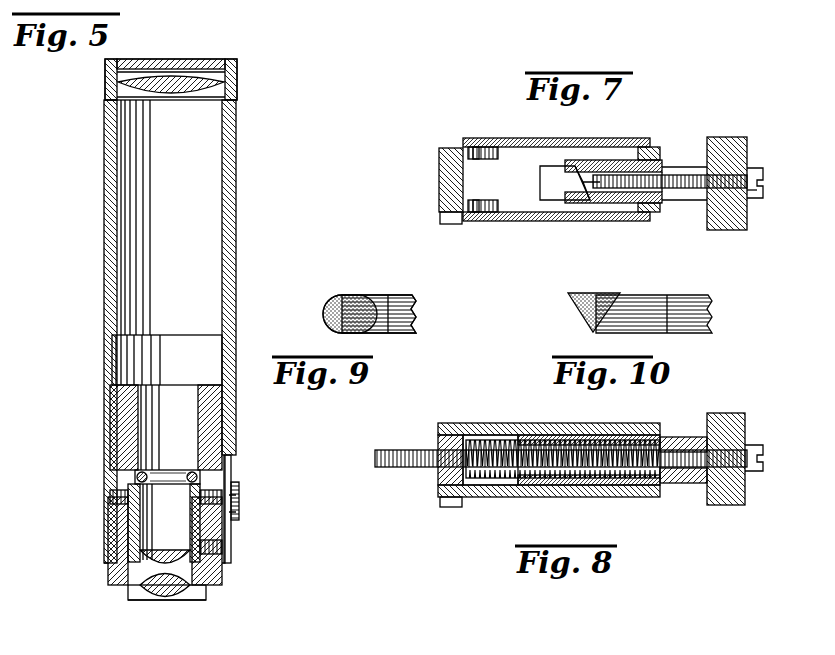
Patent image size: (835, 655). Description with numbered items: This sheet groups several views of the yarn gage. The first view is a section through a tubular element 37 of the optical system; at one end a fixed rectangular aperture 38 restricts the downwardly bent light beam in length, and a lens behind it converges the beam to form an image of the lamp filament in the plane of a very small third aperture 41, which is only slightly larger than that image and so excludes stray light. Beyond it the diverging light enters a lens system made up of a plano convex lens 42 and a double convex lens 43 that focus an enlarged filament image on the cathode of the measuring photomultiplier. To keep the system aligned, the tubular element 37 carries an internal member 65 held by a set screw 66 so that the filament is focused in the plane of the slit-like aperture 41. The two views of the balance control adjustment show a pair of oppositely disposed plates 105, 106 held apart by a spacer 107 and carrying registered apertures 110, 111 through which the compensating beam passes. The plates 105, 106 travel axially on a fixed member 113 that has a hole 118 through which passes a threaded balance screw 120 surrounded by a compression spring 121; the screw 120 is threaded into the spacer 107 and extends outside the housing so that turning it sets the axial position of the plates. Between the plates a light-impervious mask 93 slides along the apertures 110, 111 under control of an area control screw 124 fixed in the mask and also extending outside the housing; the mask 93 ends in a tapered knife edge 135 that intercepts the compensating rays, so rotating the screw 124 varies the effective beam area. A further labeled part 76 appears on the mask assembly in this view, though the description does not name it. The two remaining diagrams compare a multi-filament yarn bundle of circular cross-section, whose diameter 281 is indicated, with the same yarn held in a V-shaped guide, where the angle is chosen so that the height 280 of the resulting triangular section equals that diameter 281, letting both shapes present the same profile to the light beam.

In FIG. 5, the tubular element 37 is at (237, 166).
In FIG. 5, the rectangular aperture 38 is at (178, 62).
In FIG. 5, the third aperture 41 is at (165, 474).
In FIG. 5, the plano convex lens 42 is at (110, 584).
In FIG. 5, the double convex lens 43 is at (156, 598).
In FIG. 5, the internal member 65 is at (208, 594).
In FIG. 5, the set screw 66 is at (240, 516).
In FIG. 7, the inner sleeve 76 is at (609, 143).
In FIG. 7, the mask 93 is at (663, 165).
In FIG. 7, the upper plate 105 is at (462, 147).
In FIG. 8, the upper plate 105 is at (538, 423).
In FIG. 7, the lower plate 106 is at (461, 222).
In FIG. 8, the lower plate 106 is at (486, 497).
In FIG. 7, the spacer 107 is at (440, 172).
In FIG. 8, the spacer 107 is at (440, 476).
In FIG. 7, the balance control aperture 110 is at (478, 160).
In FIG. 7, the balance control aperture 111 is at (484, 215).
In FIG. 8, the fixed member 113 is at (667, 440).
In FIG. 8, the hole 118 is at (656, 486).
In FIG. 8, the threaded balance screw 120 is at (405, 452).
In FIG. 8, the compression spring 121 is at (514, 462).
In FIG. 7, the area control screw 124 is at (737, 178).
In FIG. 7, the knife edge 135 is at (565, 168).
In FIG. 10, the height 280 is at (669, 300).
In FIG. 9, the diameter 281 is at (388, 300).